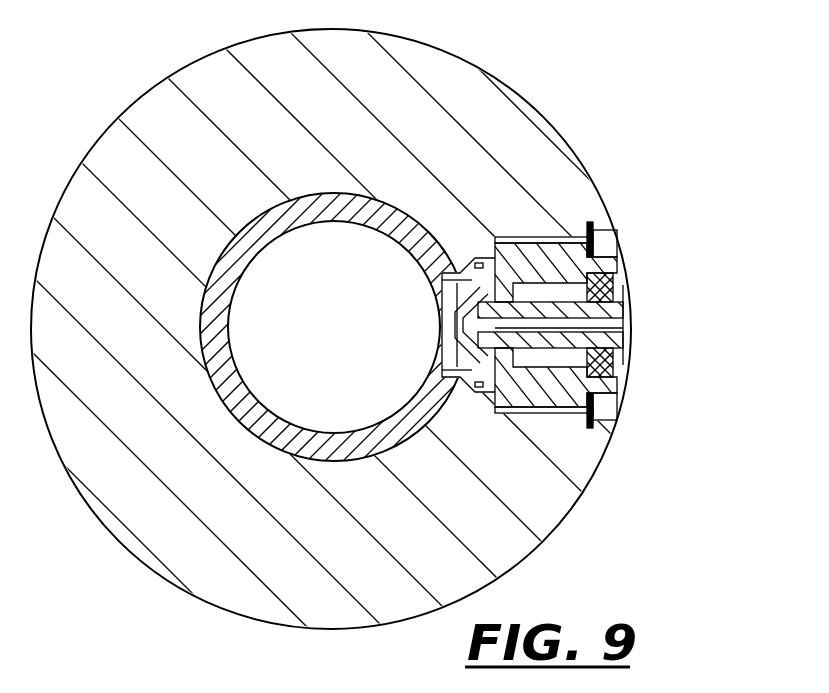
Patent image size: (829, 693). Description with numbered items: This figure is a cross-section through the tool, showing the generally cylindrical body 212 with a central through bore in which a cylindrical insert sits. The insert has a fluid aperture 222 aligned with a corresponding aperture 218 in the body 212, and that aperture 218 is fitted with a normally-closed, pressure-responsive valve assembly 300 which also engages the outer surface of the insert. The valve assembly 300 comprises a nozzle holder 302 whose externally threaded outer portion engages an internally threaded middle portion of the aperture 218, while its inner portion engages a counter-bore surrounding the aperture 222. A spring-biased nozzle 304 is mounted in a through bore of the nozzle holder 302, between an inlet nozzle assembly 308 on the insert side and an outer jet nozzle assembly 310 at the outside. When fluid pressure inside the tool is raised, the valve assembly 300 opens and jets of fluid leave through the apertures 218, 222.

The body 212 is at (570, 140).
The aperture 218 is at (575, 237).
The fluid aperture 222 is at (437, 334).
The valve assembly 300 is at (660, 319).
The nozzle holder 302 is at (533, 400).
The spring-biased nozzle 304 is at (550, 342).
The inlet nozzle assembly 308 is at (441, 306).
The outer jet nozzle assembly 310 is at (623, 283).